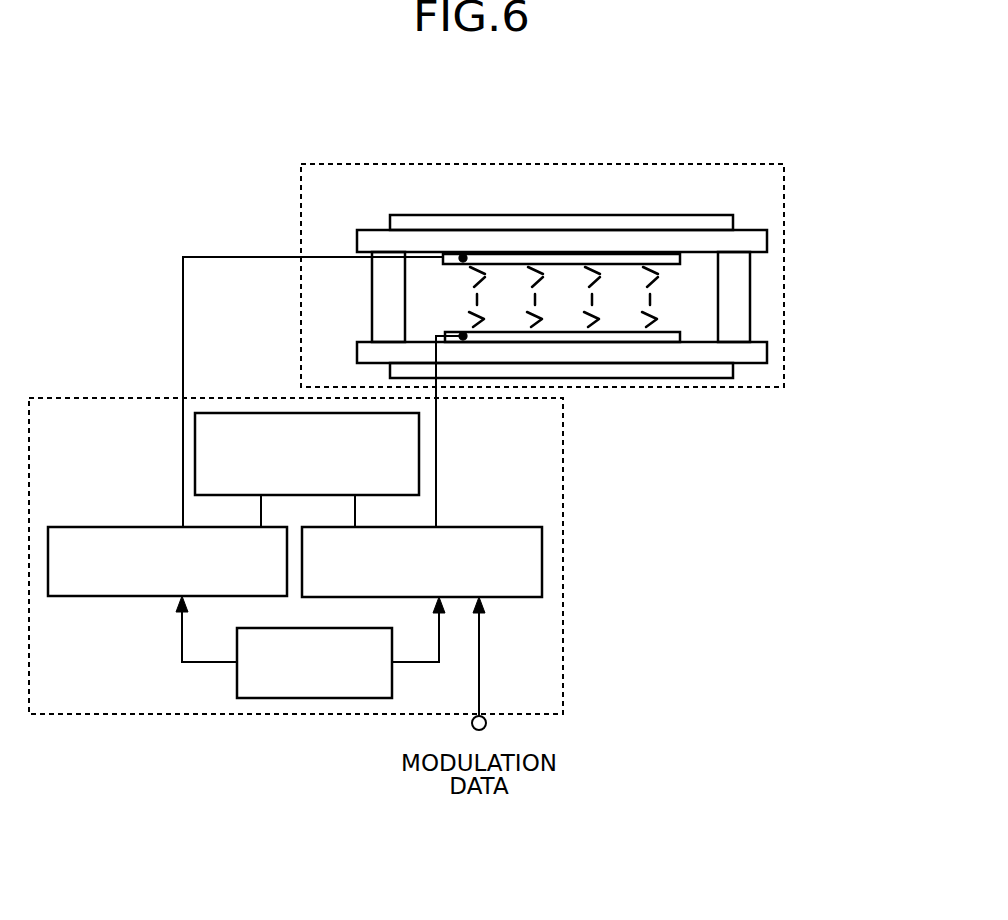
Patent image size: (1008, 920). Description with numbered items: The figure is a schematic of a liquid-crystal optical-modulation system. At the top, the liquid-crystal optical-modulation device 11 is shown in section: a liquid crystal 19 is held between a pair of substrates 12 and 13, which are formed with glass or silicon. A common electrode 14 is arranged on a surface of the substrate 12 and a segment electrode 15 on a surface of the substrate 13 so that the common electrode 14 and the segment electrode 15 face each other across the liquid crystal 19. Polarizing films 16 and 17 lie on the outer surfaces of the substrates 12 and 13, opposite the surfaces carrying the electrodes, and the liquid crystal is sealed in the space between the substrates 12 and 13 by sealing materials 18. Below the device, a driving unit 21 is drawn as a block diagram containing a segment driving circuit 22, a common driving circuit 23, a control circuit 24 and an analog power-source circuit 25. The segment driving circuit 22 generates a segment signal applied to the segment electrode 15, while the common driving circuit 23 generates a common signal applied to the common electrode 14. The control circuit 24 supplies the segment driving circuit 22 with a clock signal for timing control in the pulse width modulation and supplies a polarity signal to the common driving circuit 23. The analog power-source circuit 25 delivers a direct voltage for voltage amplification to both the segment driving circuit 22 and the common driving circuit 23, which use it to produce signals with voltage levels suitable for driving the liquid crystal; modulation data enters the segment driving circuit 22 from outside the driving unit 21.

The liquid-crystal optical-modulation device 11 is at (608, 164).
The substrate 12 is at (755, 243).
The substrate 13 is at (758, 352).
The common electrode 14 is at (618, 258).
The segment electrode 15 is at (652, 337).
The polarizing film 16 is at (730, 225).
The polarizing film 17 is at (720, 370).
The sealing material 18 is at (740, 325).
The liquid crystal 19 is at (672, 313).
The driving unit 21 is at (563, 530).
The segment driving circuit 22 is at (517, 527).
The common driving circuit 23 is at (120, 527).
The control circuit 24 is at (310, 698).
The analog power-source circuit 25 is at (255, 413).